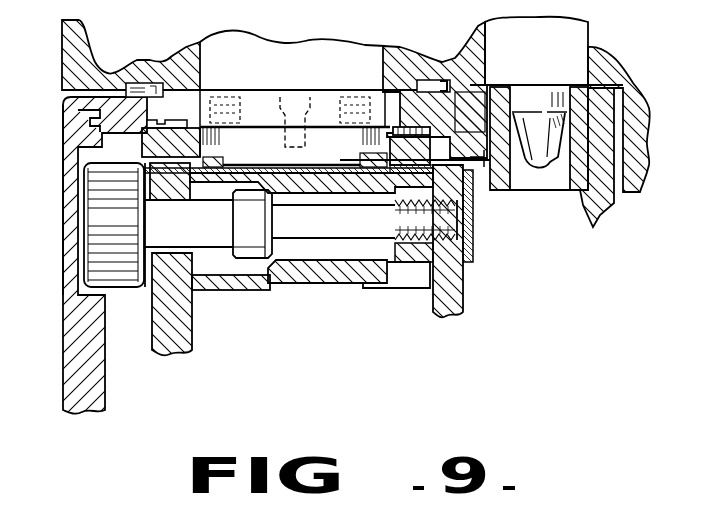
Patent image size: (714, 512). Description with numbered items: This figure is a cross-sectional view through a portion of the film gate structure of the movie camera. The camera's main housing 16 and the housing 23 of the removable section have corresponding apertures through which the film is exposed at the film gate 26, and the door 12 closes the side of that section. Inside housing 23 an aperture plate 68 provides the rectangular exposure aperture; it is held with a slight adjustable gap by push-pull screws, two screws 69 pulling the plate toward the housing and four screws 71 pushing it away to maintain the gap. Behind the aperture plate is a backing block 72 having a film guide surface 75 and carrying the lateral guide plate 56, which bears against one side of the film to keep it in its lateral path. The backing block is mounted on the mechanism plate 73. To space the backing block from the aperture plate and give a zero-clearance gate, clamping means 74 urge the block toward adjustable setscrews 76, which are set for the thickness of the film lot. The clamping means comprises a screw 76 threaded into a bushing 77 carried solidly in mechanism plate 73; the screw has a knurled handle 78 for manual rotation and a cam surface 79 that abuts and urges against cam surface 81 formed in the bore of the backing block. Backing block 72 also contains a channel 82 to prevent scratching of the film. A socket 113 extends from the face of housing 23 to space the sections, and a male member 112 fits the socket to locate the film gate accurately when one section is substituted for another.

The door 12 is at (72, 333).
The main housing 16 is at (640, 80).
The housing 23 is at (484, 160).
The film gate 26 is at (307, 128).
The lateral guide plate 56 is at (193, 350).
The aperture plate 68 is at (441, 133).
The screws 69 is at (288, 70).
The screws 71 is at (210, 86).
The backing block 72 is at (290, 286).
The mechanism plate 73 is at (462, 318).
The clamping means 74 is at (139, 284).
The film guide surface 75 is at (340, 186).
The setscrews / screw 76 is at (178, 125).
The bushing 77 is at (473, 262).
The knurled handle 78 is at (90, 190).
The cam surface 79 is at (276, 284).
The cam surface 81 is at (272, 205).
The channel 82 is at (364, 290).
The male members 112 is at (543, 168).
The socket 113 is at (590, 85).